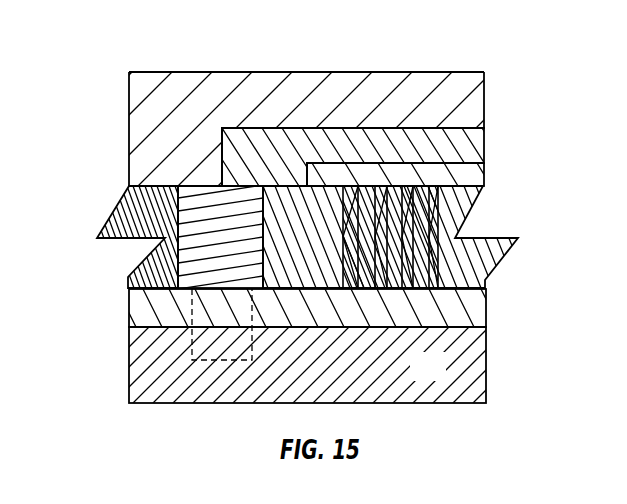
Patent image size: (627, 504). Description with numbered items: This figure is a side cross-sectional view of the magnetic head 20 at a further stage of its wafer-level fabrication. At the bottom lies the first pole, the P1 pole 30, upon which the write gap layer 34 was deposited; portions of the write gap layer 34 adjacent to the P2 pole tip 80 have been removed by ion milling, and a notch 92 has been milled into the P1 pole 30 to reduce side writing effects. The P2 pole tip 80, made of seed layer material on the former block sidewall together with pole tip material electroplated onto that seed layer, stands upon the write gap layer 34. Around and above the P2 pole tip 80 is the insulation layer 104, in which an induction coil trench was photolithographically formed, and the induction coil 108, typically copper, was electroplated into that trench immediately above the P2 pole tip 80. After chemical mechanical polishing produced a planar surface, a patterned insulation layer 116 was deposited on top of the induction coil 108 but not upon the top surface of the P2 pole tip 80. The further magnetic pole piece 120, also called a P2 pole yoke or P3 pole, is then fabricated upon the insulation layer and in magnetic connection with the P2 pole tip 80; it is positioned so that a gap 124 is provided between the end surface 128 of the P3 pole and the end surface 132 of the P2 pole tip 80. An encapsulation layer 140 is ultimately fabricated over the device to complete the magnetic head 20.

The magnetic head 20 is at (500, 82).
The first pole (P1) 30 is at (444, 378).
The write gap layer 34 is at (130, 318).
The P2 pole tip 80 is at (195, 245).
The notch 92 is at (196, 362).
The insulation layer 104 is at (120, 229).
The induction coil 108 is at (435, 233).
The patterned insulation layer 116 is at (460, 176).
The magnetic pole piece (P3 pole) 120 is at (460, 152).
The gap 124 is at (177, 170).
The end surface of the P3 pole 128 is at (218, 150).
The end surface of the P2 pole tip 132 is at (177, 215).
The encapsulation layer 140 is at (138, 118).